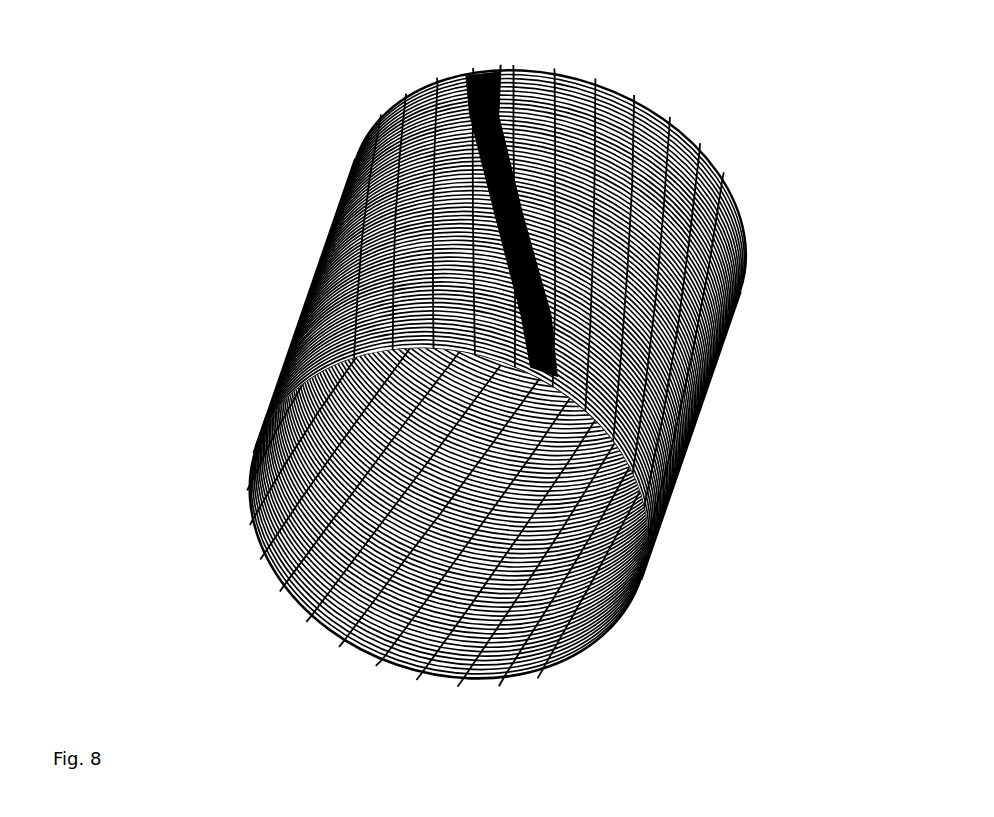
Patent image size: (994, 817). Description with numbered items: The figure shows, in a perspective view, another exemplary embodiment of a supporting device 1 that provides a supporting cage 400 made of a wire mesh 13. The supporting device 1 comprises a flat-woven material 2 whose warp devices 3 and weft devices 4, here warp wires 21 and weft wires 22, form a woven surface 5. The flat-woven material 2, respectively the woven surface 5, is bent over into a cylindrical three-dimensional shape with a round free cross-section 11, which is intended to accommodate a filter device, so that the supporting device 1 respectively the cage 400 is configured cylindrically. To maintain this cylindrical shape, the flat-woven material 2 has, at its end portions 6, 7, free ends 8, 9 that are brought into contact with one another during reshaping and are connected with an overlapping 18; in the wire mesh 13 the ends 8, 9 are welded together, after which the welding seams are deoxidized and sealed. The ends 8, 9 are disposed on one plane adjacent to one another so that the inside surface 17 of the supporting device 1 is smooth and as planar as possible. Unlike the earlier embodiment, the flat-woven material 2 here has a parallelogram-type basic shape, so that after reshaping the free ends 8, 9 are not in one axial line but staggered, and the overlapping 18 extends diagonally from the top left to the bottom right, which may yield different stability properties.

The supporting cage 400 is at (178, 72).
The supporting device 1 is at (787, 74).
The flat-woven material 2 is at (703, 290).
The warp devices 3 is at (572, 152).
The warp wires 21 is at (607, 80).
The weft devices 4 is at (414, 589).
The weft wires 22 is at (327, 627).
The woven surface 5 is at (343, 180).
The end portion 6 is at (446, 56).
The end portion 7 is at (540, 52).
The free end 8 is at (478, 62).
The free end 9 is at (508, 62).
The free cross-section 11 is at (247, 432).
The wire mesh 13 is at (295, 308).
The inside surface 17 is at (518, 375).
The overlapping 18 is at (536, 378).